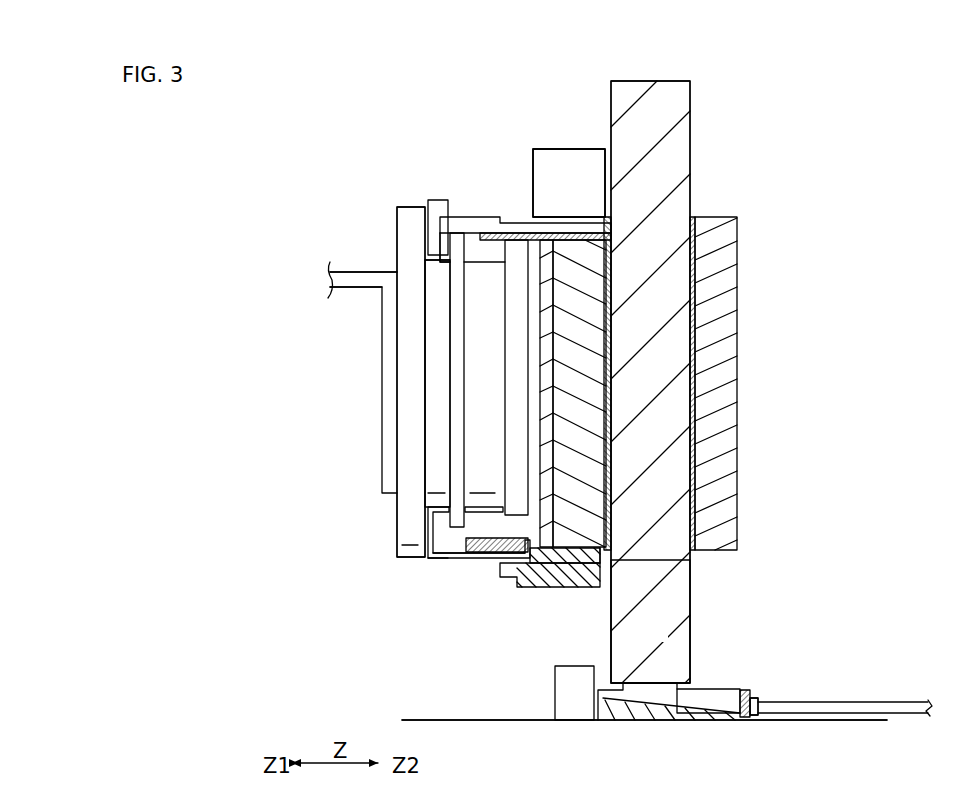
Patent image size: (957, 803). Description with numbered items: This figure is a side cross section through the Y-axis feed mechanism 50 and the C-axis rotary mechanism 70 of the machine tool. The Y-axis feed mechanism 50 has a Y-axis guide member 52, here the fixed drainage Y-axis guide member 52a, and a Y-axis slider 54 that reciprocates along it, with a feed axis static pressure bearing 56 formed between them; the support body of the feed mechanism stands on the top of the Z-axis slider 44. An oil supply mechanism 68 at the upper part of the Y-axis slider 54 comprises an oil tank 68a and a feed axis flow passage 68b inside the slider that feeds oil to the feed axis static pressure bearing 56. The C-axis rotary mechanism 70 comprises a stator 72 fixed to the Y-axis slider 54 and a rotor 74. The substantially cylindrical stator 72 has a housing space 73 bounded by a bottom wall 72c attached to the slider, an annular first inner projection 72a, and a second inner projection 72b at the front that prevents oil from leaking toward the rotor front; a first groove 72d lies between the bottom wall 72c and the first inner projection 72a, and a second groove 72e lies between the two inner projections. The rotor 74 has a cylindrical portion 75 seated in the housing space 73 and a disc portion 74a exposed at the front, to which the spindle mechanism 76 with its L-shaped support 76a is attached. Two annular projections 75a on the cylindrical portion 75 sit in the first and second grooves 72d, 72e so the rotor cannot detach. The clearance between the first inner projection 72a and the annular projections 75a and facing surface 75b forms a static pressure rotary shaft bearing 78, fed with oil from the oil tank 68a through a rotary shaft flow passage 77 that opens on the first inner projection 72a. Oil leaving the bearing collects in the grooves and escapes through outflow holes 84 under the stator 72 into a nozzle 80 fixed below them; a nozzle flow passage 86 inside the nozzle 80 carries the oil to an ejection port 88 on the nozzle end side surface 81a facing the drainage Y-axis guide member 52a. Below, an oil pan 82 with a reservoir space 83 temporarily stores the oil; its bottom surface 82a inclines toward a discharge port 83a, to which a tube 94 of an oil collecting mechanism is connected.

The Z-axis slider 44 is at (468, 720).
The Y-axis feed mechanism 50 is at (745, 205).
The Y-axis guide member 52 is at (650, 382).
The drainage Y-axis guide member 52a is at (610, 110).
The Y-axis slider 54 is at (723, 298).
The feed axis static pressure bearing 56 is at (693, 222).
The oil supply mechanism 68 is at (566, 128).
The oil tank 68a is at (557, 165).
The feed axis flow passage 68b is at (611, 252).
The C-axis rotary mechanism 70 is at (396, 184).
The stator 72 is at (473, 220).
The first inner projection 72a is at (482, 264).
The second inner projection 72b is at (423, 250).
The bottom wall 72c is at (548, 322).
The first groove 72d is at (553, 255).
The second groove 72e is at (443, 232).
The housing space 73 is at (533, 393).
The rotor 74 is at (411, 382).
The disc portion 74a is at (413, 522).
The cylindrical portion 75 is at (438, 434).
The annular projection 75a is at (517, 447).
The facing surface 75b is at (482, 500).
The spindle mechanism 76 is at (363, 279).
The support 76a is at (390, 377).
The rotary shaft flow passage 77 is at (512, 236).
The static pressure rotary shaft bearing 78 is at (433, 562).
The nozzle 80 is at (578, 588).
The nozzle end side surface 81a is at (612, 567).
The oil pan 82 is at (647, 707).
The bottom surface 82a is at (710, 707).
The reservoir space 83 is at (730, 690).
The discharge port 83a is at (747, 718).
The outflow hole 84 is at (530, 520).
The nozzle flow passage 86 is at (537, 567).
The ejection port 88 is at (604, 558).
The tube 94 is at (903, 707).